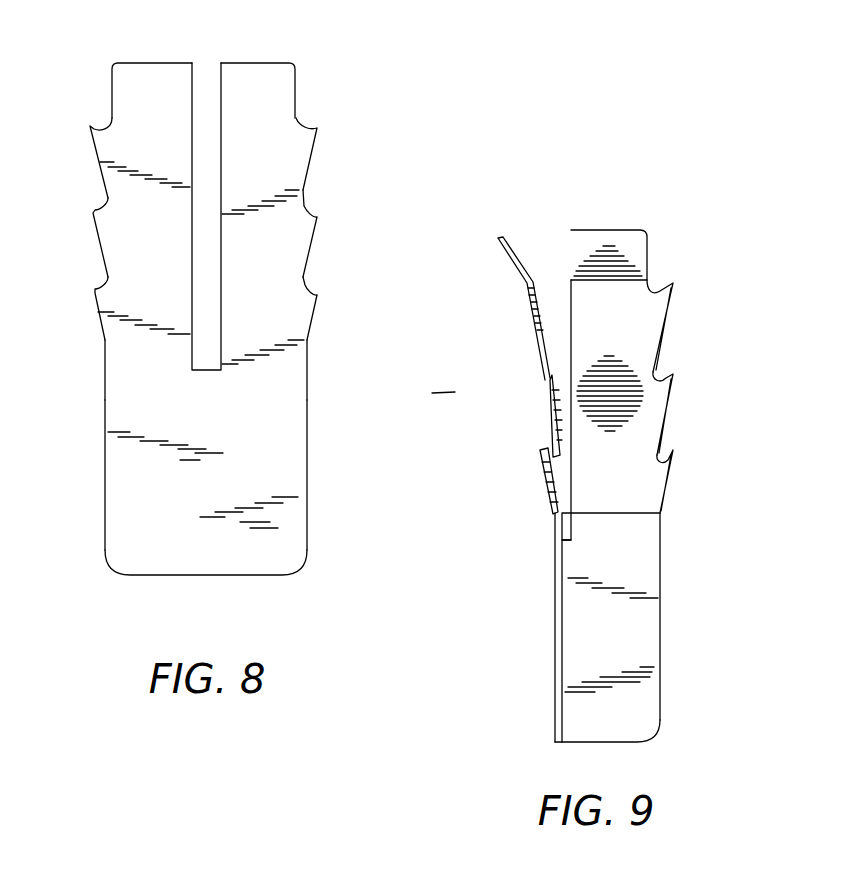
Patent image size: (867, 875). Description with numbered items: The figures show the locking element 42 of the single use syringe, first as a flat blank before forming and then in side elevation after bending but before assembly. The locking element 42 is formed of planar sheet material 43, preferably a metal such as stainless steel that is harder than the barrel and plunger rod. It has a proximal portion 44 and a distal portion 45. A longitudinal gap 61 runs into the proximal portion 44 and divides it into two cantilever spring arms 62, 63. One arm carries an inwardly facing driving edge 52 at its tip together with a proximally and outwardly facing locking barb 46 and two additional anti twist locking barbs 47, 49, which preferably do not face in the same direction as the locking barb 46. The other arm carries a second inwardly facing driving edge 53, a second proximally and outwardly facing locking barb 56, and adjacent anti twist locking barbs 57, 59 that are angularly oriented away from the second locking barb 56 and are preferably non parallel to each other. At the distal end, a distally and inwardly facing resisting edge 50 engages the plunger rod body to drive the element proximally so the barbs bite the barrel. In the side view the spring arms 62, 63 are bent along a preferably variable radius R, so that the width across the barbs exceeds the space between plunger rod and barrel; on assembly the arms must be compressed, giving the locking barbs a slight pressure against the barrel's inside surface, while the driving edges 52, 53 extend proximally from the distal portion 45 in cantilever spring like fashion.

In FIG. 9, the locking element 42 is at (672, 600).
In FIG. 8, the planar sheet material 43 is at (173, 407).
In FIG. 8, the proximal portion 44 is at (277, 97).
In FIG. 9, the proximal portion 44 is at (627, 335).
In FIG. 8, the distal portion 45 is at (280, 513).
In FIG. 9, the distal portion 45 is at (633, 702).
In FIG. 8, the locking barb 46 is at (315, 128).
In FIG. 9, the locking barb 46 is at (670, 285).
In FIG. 8, the anti twist locking barb 47 is at (320, 212).
In FIG. 9, the anti twist locking barb 47 is at (660, 395).
In FIG. 8, the anti twist locking barb 49 is at (317, 295).
In FIG. 9, the anti twist locking barb 49 is at (660, 470).
In FIG. 8, the resisting edge 50 is at (183, 578).
In FIG. 9, the resisting edge 50 is at (592, 747).
In FIG. 8, the driving edge 52 is at (267, 62).
In FIG. 9, the driving edge 52 is at (615, 230).
In FIG. 8, the second driving edge 53 is at (150, 62).
In FIG. 9, the second driving edge 53 is at (498, 238).
In FIG. 8, the second locking barb 56 is at (90, 123).
In FIG. 9, the second locking barb 56 is at (530, 303).
In FIG. 8, the anti twist locking barb 57 is at (97, 205).
In FIG. 9, the anti twist locking barb 57 is at (552, 393).
In FIG. 8, the anti twist locking barb 59 is at (93, 295).
In FIG. 9, the anti twist locking barb 59 is at (545, 470).
In FIG. 8, the longitudinal gap 61 is at (200, 80).
In FIG. 8, the cantilever spring arm 62 is at (267, 303).
In FIG. 8, the cantilever spring arm 63 is at (143, 282).
In FIG. 9, the variable radius R is at (540, 380).